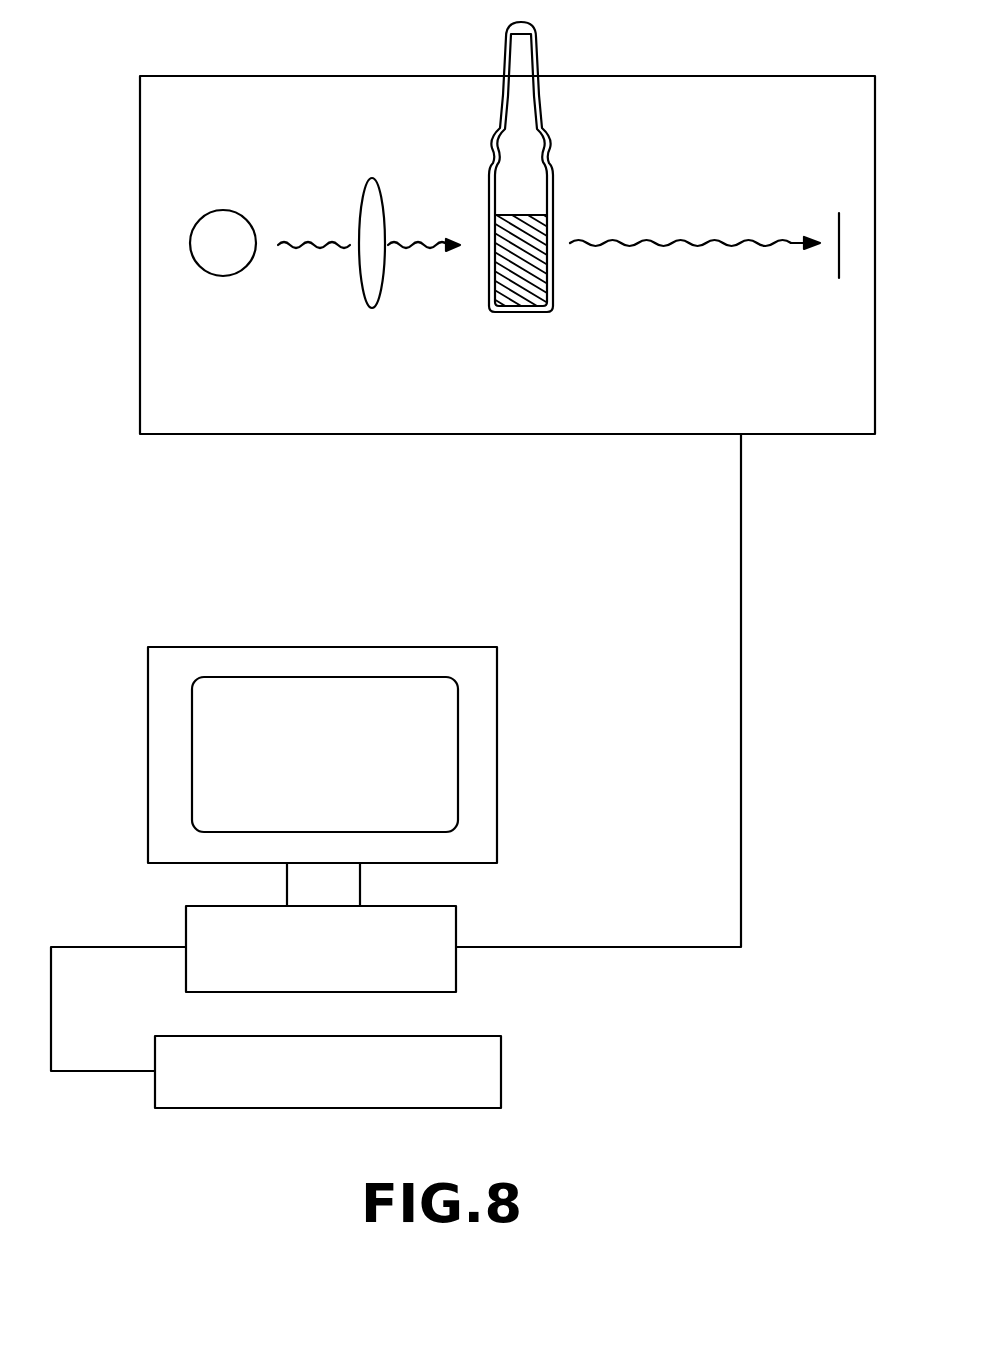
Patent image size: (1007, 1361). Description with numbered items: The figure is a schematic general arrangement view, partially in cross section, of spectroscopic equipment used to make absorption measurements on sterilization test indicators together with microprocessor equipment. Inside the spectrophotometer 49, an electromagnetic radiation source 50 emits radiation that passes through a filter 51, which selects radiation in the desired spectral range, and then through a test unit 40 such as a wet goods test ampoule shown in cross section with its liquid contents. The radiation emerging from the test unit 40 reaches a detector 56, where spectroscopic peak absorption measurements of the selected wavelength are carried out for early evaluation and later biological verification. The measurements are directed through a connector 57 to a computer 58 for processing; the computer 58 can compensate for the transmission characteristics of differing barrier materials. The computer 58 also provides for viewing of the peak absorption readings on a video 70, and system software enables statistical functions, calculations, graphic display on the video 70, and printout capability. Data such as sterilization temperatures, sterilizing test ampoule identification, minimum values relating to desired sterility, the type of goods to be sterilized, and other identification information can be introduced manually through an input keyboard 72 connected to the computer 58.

The test unit 40 is at (514, 320).
The spectrophotometer 49 is at (381, 465).
The electromagnetic radiation source 50 is at (224, 276).
The filter 51 is at (372, 308).
The detector 56 is at (840, 288).
The connector 57 is at (741, 658).
The computer 58 is at (346, 956).
The video 70 is at (440, 780).
The input keyboard 72 is at (501, 1071).